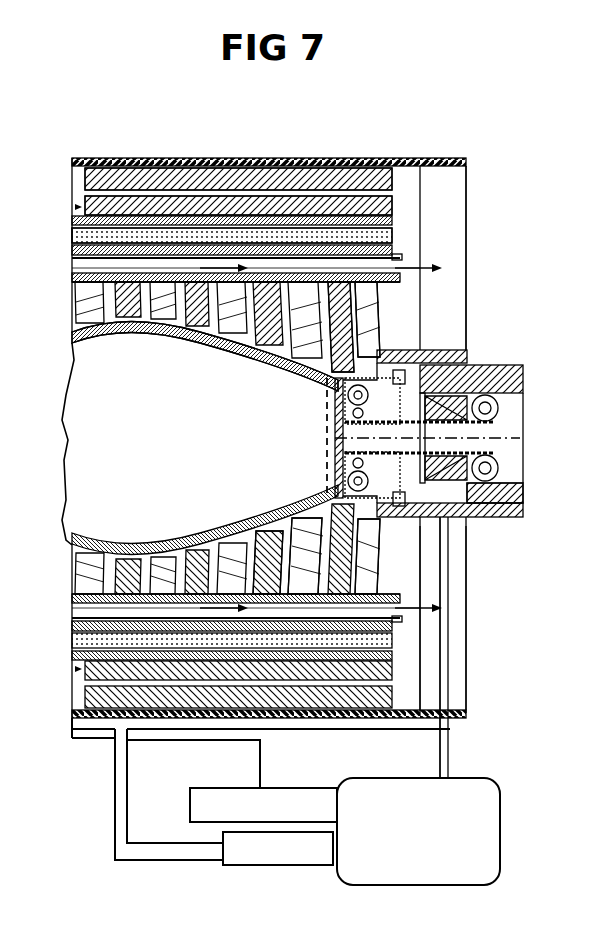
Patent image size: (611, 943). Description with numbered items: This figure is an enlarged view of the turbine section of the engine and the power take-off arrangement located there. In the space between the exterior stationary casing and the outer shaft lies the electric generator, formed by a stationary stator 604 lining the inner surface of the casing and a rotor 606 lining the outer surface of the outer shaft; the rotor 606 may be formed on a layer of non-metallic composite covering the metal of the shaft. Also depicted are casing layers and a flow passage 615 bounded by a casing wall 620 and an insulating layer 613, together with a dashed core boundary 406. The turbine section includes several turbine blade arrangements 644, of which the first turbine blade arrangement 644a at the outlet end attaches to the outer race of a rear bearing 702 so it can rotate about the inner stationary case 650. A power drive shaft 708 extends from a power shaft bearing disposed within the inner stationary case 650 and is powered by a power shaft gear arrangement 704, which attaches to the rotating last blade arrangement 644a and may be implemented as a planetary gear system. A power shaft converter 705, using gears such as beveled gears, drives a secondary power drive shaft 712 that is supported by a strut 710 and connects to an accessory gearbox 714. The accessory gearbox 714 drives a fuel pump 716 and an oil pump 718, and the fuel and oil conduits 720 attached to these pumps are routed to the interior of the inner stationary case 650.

The stationary stator 604 is at (178, 183).
The rotor 606 is at (128, 207).
The acoustic insulation layer 613 is at (400, 240).
The flow passage 615 is at (412, 267).
The casing frame wall 620 is at (476, 185).
The rear bearing 702 is at (385, 325).
The power shaft gear arrangement 704 is at (420, 405).
The power drive shaft 708 is at (500, 438).
The inner stationary case 650 is at (283, 363).
The core boundary 406 is at (320, 459).
The support strut 710 is at (490, 530).
The power shaft converter 705 is at (462, 545).
The first turbine blade arrangement 644a is at (378, 576).
The rotor blades 644 is at (268, 590).
The secondary power drive shaft 712 is at (435, 757).
The accessory gearbox 714 is at (500, 830).
The fuel pump 716 is at (190, 813).
The oil pump 718 is at (305, 865).
The fuel and oil conduits 720 is at (123, 725).